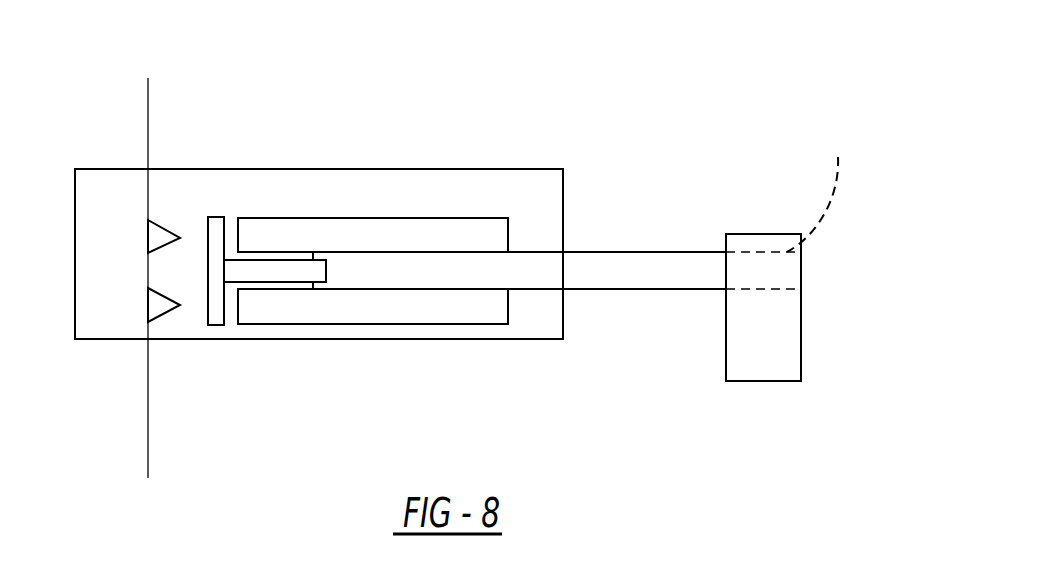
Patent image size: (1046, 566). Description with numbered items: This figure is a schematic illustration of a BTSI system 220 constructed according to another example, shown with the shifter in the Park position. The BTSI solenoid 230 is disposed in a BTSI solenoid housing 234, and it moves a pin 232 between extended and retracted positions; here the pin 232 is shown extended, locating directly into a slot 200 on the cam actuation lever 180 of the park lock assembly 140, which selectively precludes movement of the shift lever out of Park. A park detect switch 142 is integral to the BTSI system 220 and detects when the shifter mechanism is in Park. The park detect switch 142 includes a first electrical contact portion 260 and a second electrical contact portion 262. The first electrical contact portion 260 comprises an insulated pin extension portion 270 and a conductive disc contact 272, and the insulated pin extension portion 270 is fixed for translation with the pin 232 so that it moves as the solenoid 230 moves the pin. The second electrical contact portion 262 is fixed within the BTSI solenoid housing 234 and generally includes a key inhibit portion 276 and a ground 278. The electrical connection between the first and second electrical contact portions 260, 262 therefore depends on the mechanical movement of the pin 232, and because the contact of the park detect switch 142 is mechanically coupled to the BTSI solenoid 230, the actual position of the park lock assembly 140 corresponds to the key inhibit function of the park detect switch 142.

The park lock assembly 140 is at (800, 139).
The park detect switch 142 is at (184, 125).
The cam actuation lever 180 is at (769, 363).
The slot 200 is at (826, 186).
The BTSI system 220 is at (475, 101).
The BTSI solenoid 230 is at (440, 227).
The pin 232 is at (622, 262).
The BTSI solenoid housing 234 is at (370, 168).
The first electrical contact portion 260 is at (232, 350).
The second electrical contact portion 262 is at (180, 353).
The insulated pin extension portion 270 is at (295, 270).
The conductive disc contact 272 is at (217, 225).
The key inhibit portion 276 is at (157, 233).
The ground 278 is at (157, 307).